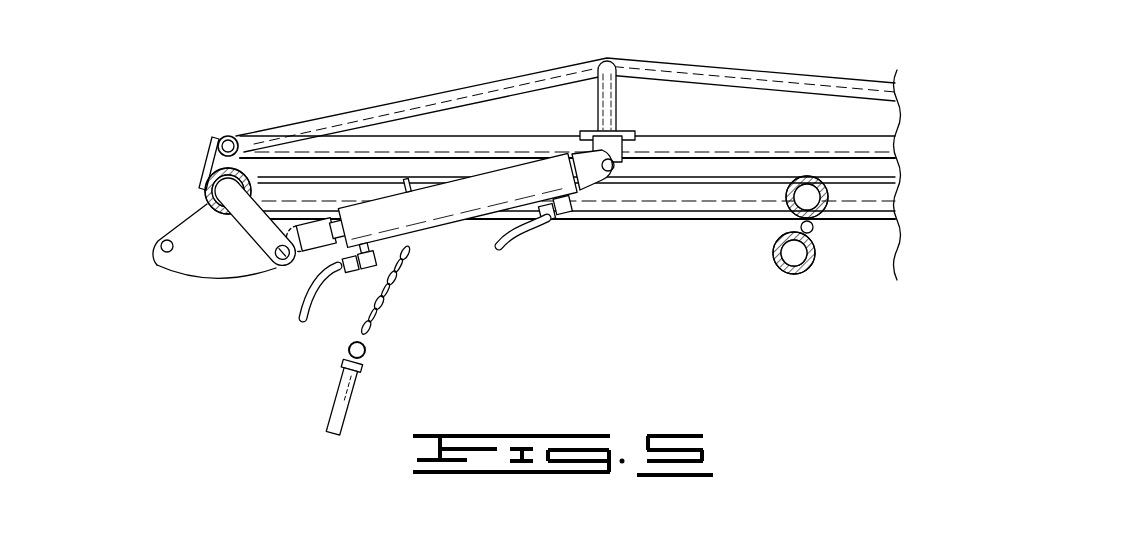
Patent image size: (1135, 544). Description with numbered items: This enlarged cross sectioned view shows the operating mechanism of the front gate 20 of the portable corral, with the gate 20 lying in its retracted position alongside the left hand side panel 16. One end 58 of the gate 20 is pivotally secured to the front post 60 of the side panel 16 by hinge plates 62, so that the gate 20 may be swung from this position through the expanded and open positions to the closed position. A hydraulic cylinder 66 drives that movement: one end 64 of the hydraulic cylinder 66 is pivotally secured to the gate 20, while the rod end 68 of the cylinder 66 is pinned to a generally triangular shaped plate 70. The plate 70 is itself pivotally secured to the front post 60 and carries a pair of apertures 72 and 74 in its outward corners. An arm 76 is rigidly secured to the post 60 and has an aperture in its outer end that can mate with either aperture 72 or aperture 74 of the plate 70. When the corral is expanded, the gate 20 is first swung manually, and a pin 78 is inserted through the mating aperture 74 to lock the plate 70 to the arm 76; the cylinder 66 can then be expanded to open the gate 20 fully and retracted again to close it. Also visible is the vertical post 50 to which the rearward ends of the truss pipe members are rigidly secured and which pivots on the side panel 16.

The left hand side panel 16 is at (694, 221).
The front gate 20 is at (633, 60).
The vertical post 50 is at (804, 275).
The end of the gate 58 is at (225, 137).
The front post 60 is at (214, 187).
The hinge plates 62 is at (206, 160).
The end of the hydraulic cylinder 64 is at (609, 172).
The hydraulic cylinder 66 is at (458, 221).
The rod end 68 is at (305, 257).
The generally triangular shaped plate 70 is at (200, 256).
The aperture 72 is at (166, 240).
The aperture 74 is at (282, 256).
The arm 76 is at (250, 231).
The pin 78 is at (334, 405).